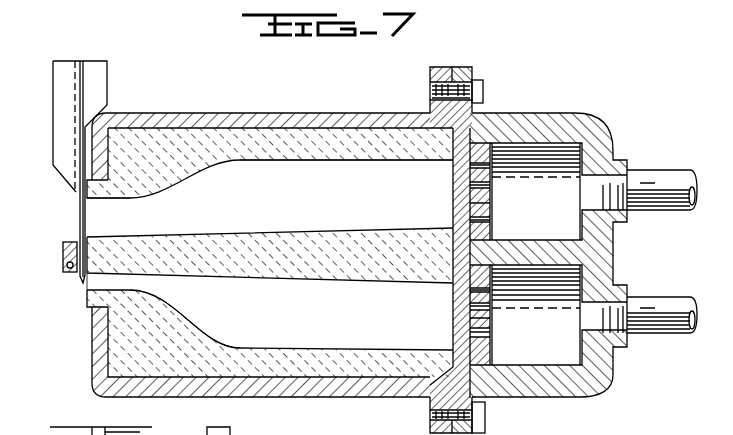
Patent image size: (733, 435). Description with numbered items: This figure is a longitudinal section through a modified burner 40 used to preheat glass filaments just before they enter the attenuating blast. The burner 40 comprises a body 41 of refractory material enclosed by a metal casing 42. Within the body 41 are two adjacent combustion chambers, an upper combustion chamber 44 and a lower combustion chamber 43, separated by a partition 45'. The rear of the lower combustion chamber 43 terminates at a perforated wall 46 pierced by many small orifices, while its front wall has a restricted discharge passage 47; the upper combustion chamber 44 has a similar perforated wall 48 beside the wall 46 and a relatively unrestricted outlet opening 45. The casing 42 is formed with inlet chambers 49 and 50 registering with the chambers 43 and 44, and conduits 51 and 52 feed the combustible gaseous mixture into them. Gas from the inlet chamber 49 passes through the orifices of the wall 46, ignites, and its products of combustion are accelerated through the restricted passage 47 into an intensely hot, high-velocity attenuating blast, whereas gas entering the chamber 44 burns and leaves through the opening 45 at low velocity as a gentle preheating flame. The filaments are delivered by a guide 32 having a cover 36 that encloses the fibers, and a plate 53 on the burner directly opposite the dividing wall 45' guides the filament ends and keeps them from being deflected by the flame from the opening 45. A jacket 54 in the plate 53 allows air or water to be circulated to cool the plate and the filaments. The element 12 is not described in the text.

The sensor 12 is at (78, 225).
The guide 32 is at (62, 98).
The cover 36 is at (96, 82).
The burner 40 is at (303, 404).
The body 41 is at (348, 368).
The metal casing 42 is at (231, 388).
The combustion chamber 43 is at (398, 343).
The combustion chamber 44 is at (365, 201).
The outlet opening 45 is at (83, 210).
The partition 45' is at (208, 308).
The perforated wall 46 is at (457, 311).
The discharge passage 47 is at (93, 276).
The perforated wall 48 is at (462, 185).
The inlet chamber 49 is at (557, 355).
The inlet chamber 50 is at (565, 152).
The conduit 51 is at (654, 304).
The conduit 52 is at (654, 178).
The plate 53 is at (63, 252).
The jacket 54 is at (67, 265).